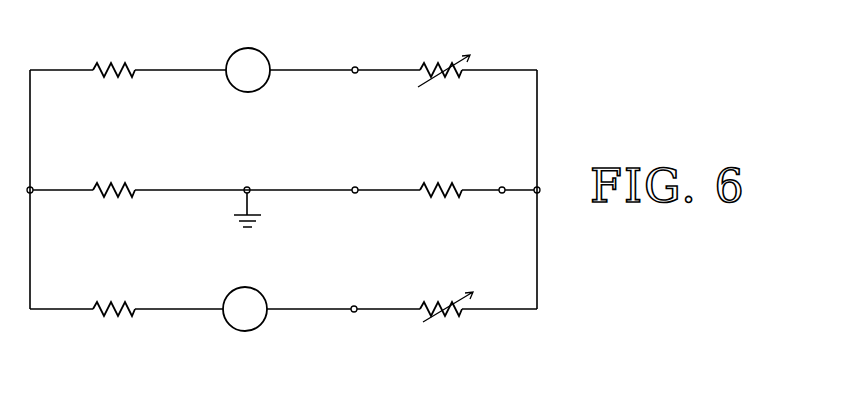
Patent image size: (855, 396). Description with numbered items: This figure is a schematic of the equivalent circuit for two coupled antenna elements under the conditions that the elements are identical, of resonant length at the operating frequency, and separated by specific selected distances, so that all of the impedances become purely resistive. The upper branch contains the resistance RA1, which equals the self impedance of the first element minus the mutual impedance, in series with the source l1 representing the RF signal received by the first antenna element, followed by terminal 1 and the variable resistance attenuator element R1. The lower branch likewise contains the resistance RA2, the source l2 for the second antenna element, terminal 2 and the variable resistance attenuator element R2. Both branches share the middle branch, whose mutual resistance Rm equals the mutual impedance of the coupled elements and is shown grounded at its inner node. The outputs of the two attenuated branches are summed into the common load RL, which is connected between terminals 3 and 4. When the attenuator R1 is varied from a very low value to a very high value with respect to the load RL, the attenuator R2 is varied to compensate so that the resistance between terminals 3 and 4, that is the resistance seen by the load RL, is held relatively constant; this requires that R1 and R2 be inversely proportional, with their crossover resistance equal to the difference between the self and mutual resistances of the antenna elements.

The terminal 1 is at (357, 56).
The terminal 2 is at (354, 292).
The terminal 3 is at (355, 175).
The terminal 4 is at (502, 175).
The resistance RA1 is at (113, 55).
The resistance RA2 is at (113, 292).
The variable resistance attenuator element R1 is at (444, 60).
The variable resistance attenuator element R2 is at (446, 294).
The mutual resistance Rm is at (113, 174).
The common load RL is at (441, 174).
The RF signal source l1 is at (248, 70).
The RF signal source l2 is at (245, 309).